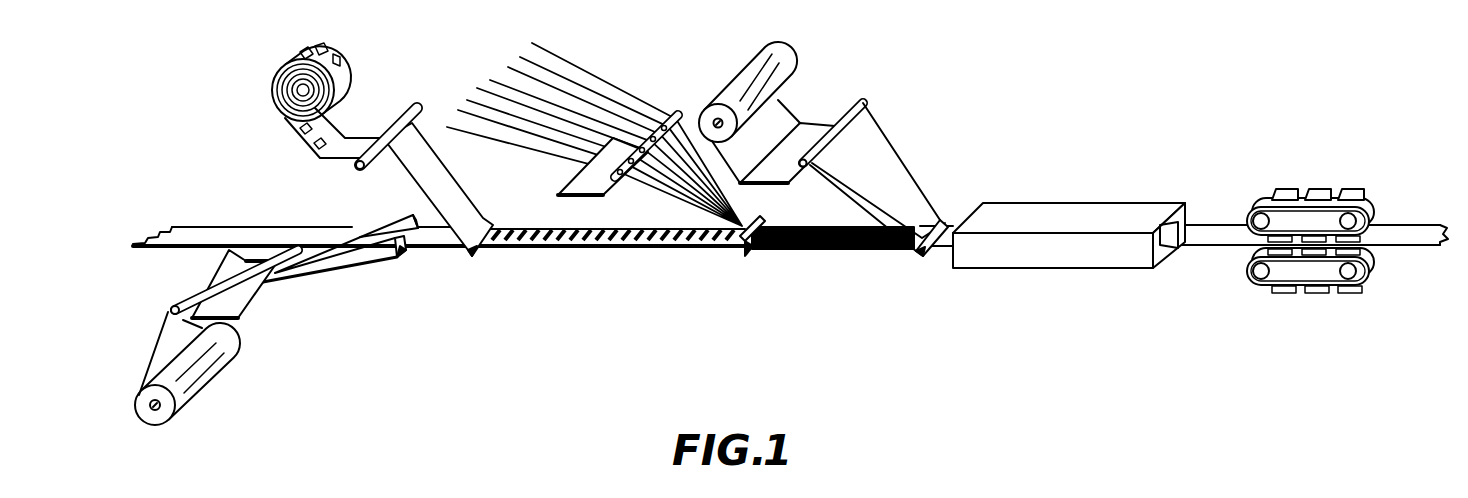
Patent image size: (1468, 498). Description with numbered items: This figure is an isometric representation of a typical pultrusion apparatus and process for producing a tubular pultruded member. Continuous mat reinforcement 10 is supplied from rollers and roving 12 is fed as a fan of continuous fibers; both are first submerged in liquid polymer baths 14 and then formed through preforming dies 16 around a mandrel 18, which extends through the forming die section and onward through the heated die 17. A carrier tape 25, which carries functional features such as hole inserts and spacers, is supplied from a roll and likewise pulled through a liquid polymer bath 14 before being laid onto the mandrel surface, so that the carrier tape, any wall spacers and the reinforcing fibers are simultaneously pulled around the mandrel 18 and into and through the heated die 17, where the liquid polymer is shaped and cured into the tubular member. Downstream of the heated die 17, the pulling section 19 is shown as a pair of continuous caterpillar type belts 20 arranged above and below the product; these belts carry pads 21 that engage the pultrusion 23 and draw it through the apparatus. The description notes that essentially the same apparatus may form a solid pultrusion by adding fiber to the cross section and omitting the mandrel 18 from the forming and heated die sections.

The continuous mat reinforcement 10 is at (780, 57).
The roving 12 is at (560, 73).
The liquid polymer bath 14 is at (360, 137).
The preforming die 16 is at (410, 253).
The heated die 17 is at (1067, 200).
The mandrel 18 is at (263, 230).
The pulling section 19 is at (1322, 222).
The continuous caterpillar type belt 20 is at (1367, 197).
The pad 21 is at (1288, 193).
The pultrusion 23 is at (1198, 263).
The carrier tape 25 is at (332, 42).